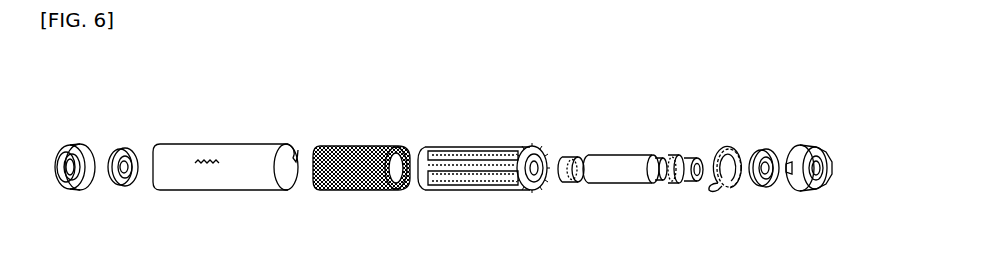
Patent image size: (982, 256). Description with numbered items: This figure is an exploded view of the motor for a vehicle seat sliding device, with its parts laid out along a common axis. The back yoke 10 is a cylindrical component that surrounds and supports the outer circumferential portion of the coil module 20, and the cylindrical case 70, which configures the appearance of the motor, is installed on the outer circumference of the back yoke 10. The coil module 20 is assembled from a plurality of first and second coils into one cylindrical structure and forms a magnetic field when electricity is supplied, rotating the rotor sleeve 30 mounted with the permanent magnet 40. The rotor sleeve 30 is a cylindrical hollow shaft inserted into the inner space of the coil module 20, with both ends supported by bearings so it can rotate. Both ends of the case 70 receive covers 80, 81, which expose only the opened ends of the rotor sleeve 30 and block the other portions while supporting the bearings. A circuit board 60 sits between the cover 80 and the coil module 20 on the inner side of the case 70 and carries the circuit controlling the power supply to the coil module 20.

The back yoke 10 is at (358, 146).
The coil module 20 is at (473, 147).
The rotor sleeve 30 is at (572, 157).
The permanent magnet 40 is at (624, 160).
The circuit board 60 is at (729, 190).
The cylindrical case 70 is at (226, 145).
The cover 80 is at (800, 148).
The cover 81 is at (70, 143).